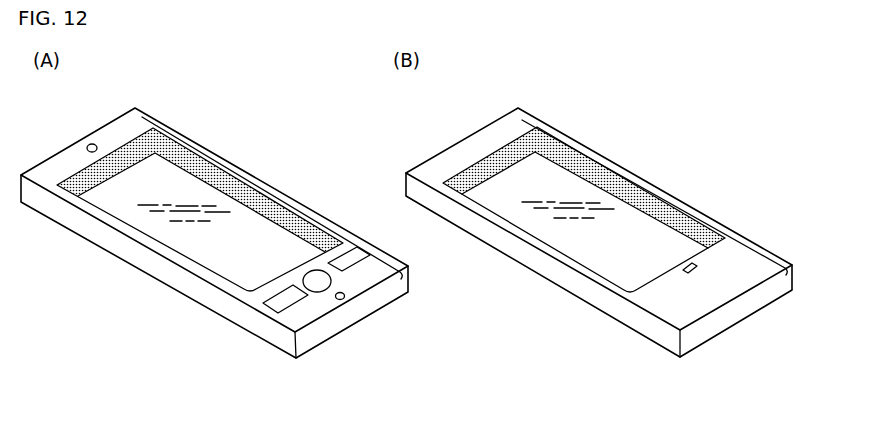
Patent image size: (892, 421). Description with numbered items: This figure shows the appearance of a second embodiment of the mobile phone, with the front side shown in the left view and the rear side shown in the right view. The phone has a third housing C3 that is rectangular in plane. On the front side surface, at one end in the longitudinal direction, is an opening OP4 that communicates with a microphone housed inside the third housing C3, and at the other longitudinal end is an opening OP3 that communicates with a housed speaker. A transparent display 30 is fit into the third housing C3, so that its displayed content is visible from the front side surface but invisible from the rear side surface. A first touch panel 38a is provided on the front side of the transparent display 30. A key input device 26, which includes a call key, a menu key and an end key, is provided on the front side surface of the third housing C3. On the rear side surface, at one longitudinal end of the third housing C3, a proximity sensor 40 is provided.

The key input device 26 is at (355, 244).
The transparent display 30 is at (192, 150).
The first touch panel 38a is at (238, 190).
The third housing C3 is at (399, 291).
The opening OP3 is at (86, 146).
The opening OP4 is at (344, 300).
The proximity sensor 40 is at (690, 274).